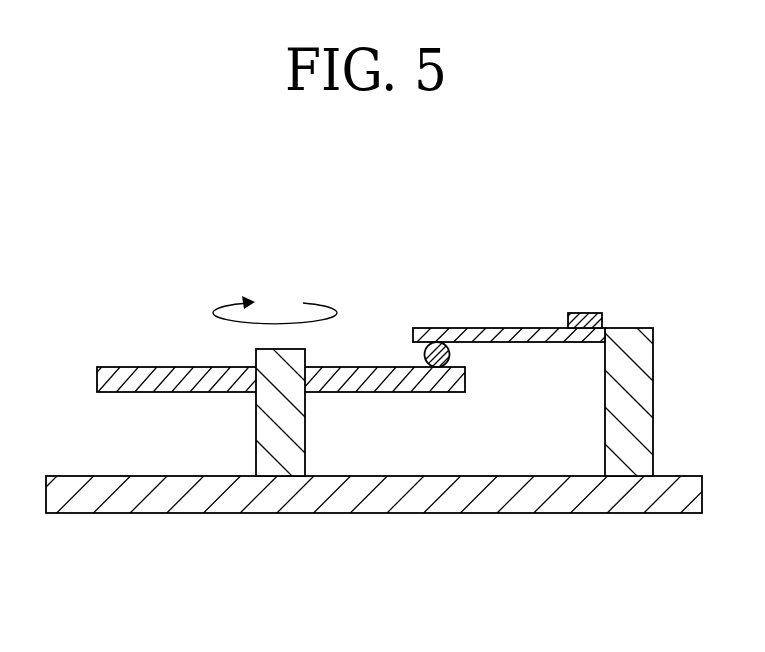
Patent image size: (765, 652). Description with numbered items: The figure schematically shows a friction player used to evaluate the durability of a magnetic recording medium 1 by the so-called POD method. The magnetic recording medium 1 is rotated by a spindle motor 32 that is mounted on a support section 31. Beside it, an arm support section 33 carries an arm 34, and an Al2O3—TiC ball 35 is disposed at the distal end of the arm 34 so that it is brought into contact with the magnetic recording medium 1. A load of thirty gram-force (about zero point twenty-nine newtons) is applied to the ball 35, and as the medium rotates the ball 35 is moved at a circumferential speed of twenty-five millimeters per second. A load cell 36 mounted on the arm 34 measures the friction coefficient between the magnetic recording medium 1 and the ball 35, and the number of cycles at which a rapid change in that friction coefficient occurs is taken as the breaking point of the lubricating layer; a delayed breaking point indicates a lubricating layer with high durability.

The magnetic recording medium 1 is at (125, 378).
The support section 31 is at (170, 500).
The spindle motor 32 is at (284, 458).
The arm support section 33 is at (622, 337).
The arm 34 is at (512, 328).
The Al2O3—TiC ball 35 is at (437, 345).
The load cell 36 is at (580, 313).